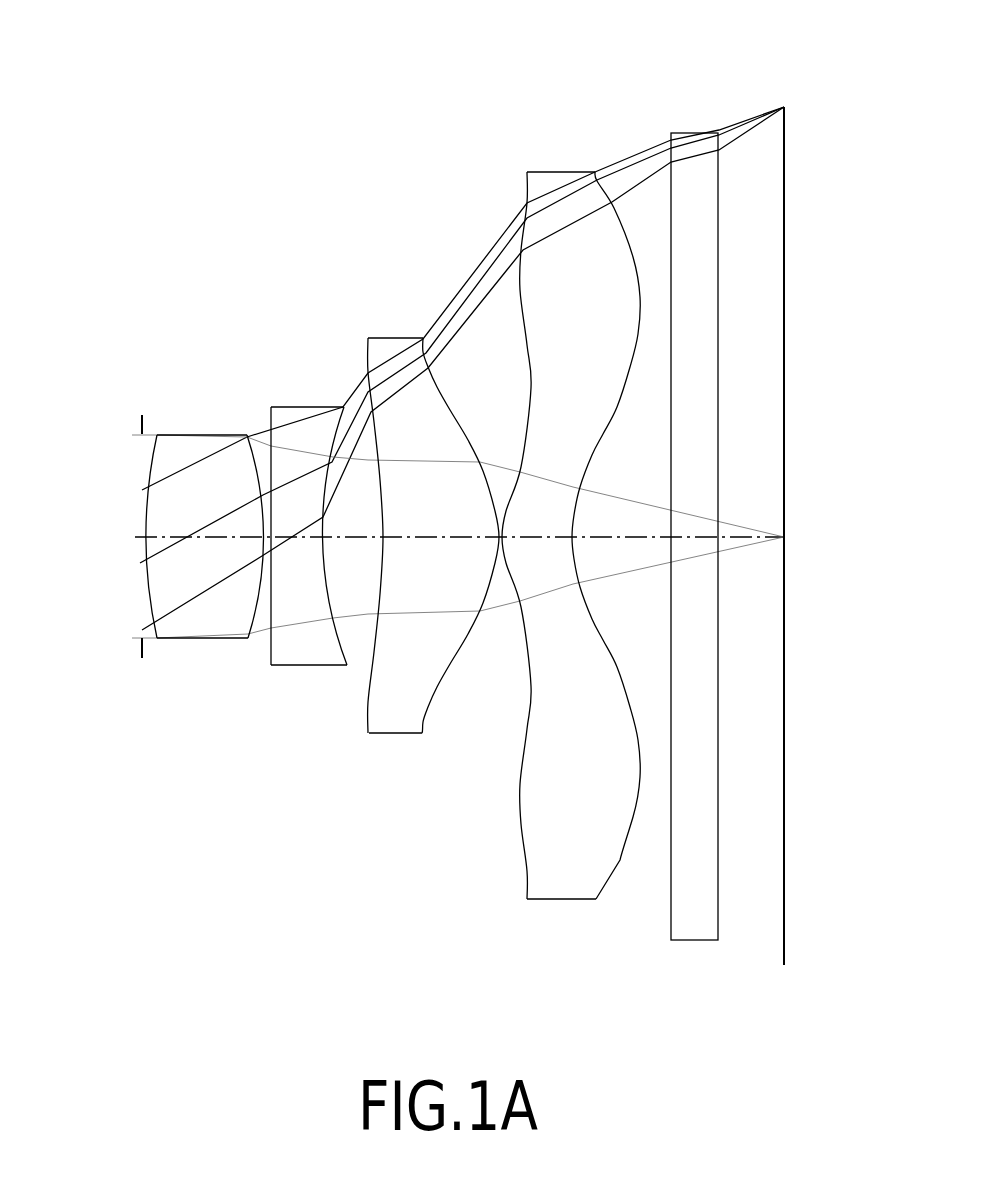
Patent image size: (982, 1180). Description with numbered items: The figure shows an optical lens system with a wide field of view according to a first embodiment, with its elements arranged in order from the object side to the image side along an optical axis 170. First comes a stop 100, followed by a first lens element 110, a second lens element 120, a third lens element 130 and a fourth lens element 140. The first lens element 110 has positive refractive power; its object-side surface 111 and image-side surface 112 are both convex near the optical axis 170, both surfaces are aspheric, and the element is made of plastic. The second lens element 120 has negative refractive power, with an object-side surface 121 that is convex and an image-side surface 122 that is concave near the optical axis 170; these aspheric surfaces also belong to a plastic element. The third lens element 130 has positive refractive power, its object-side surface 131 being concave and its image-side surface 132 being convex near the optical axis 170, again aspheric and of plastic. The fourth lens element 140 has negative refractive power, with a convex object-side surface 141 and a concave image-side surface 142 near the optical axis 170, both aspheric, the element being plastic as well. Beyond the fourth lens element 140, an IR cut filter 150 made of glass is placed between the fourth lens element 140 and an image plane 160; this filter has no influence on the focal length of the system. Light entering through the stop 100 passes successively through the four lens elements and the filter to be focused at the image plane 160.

The stop 100 is at (129, 404).
The first lens element 110 is at (183, 524).
The object-side surface of first lens element 111 is at (150, 592).
The image-side surface of first lens element 112 is at (252, 622).
The second lens element 120 is at (295, 521).
The object-side surface of second lens element 121 is at (268, 640).
The image-side surface of second lens element 122 is at (334, 632).
The third lens element 130 is at (414, 513).
The object-side surface of third lens element 131 is at (369, 682).
The image-side surface of third lens element 132 is at (448, 672).
The fourth lens element 140 is at (552, 518).
The object-side surface of fourth lens element 141 is at (521, 816).
The image-side surface of fourth lens element 142 is at (619, 867).
The IR cut filter 150 is at (701, 117).
The image plane 160 is at (775, 929).
The optical axis 170 is at (771, 524).